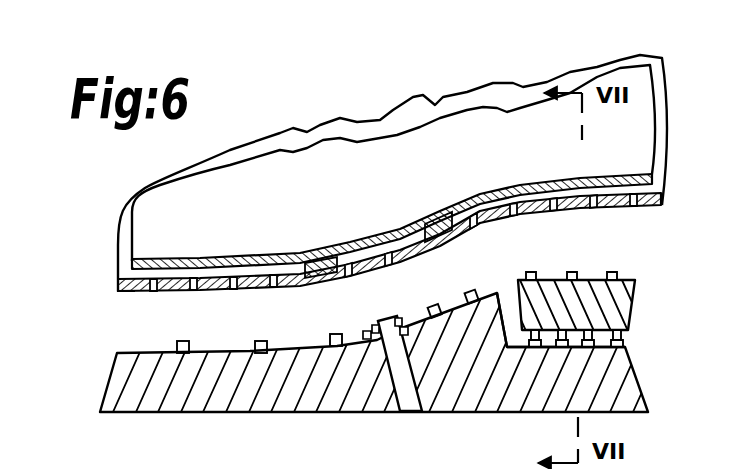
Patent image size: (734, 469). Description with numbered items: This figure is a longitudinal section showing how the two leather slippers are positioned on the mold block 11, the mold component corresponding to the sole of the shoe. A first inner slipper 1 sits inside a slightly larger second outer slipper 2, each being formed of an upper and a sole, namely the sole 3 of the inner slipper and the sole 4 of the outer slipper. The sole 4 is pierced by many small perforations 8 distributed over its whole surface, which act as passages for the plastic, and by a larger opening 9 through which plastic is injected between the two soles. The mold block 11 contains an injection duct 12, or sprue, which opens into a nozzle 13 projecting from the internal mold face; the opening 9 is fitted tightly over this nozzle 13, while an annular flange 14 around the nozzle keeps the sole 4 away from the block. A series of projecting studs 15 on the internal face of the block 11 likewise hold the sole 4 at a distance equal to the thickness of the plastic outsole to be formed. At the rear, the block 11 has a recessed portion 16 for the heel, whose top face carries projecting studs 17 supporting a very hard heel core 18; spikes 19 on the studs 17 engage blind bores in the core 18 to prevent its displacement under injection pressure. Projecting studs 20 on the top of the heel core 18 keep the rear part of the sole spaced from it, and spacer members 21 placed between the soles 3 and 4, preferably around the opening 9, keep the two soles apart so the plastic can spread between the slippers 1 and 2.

The inner slipper 1 is at (244, 169).
The outer slipper 2 is at (198, 158).
The sole of the inner slipper 3 is at (236, 256).
The sole of the outer slipper 4 is at (122, 293).
The perforations 8 is at (183, 292).
The opening 9 is at (386, 270).
The mold block 11 is at (212, 398).
The injection duct 12 is at (409, 400).
The nozzle 13 is at (373, 318).
The annular flange 14 is at (414, 328).
The projecting studs 15 is at (262, 340).
The recessed portion 16 is at (511, 342).
The projecting studs 17 is at (628, 346).
The heel core 18 is at (635, 297).
The spikes 19 is at (630, 333).
The projecting studs 20 is at (620, 277).
The spacer members 21 is at (320, 258).